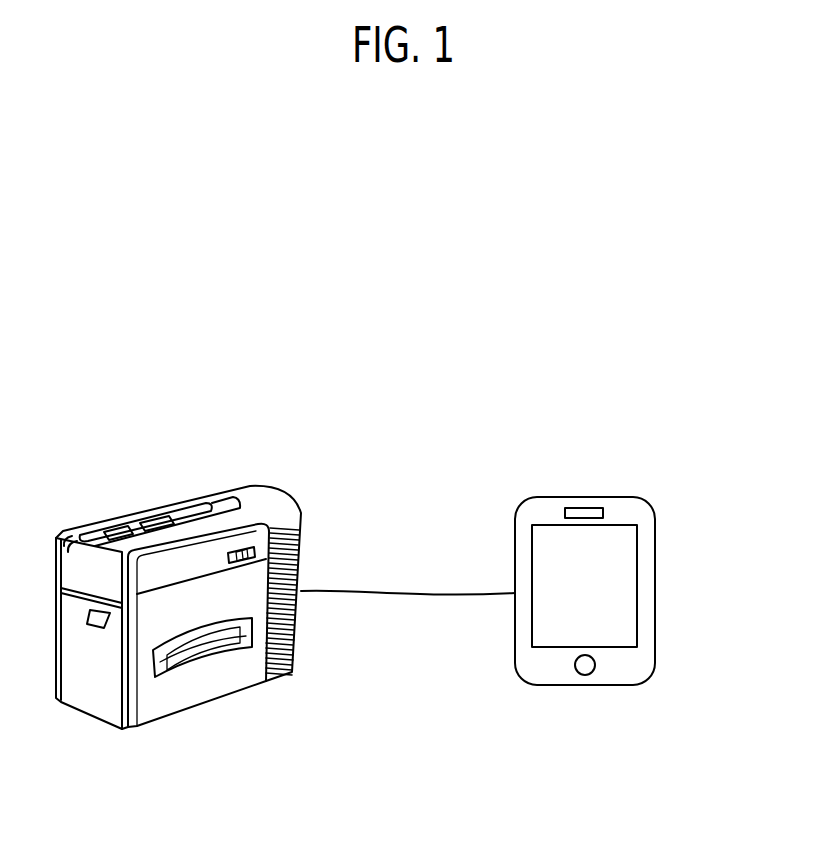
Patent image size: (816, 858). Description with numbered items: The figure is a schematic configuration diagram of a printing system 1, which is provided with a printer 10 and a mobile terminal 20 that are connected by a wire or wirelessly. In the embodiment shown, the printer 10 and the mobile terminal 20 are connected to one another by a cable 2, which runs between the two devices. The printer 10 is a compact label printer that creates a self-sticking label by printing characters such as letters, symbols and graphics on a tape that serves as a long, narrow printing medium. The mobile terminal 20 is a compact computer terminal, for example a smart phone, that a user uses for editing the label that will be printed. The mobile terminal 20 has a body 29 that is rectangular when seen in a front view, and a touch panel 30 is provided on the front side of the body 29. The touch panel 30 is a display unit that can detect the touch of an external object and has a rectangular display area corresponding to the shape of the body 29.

The printing system 1 is at (387, 447).
The cable 2 is at (403, 595).
The printer 10 is at (222, 710).
The mobile terminal 20 is at (617, 631).
The body 29 is at (655, 607).
The touch panel 30 is at (623, 568).